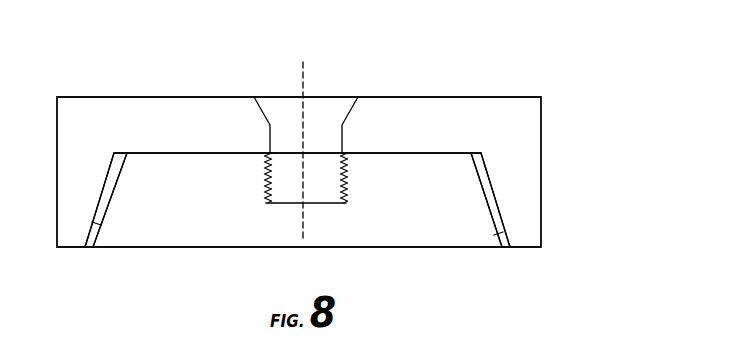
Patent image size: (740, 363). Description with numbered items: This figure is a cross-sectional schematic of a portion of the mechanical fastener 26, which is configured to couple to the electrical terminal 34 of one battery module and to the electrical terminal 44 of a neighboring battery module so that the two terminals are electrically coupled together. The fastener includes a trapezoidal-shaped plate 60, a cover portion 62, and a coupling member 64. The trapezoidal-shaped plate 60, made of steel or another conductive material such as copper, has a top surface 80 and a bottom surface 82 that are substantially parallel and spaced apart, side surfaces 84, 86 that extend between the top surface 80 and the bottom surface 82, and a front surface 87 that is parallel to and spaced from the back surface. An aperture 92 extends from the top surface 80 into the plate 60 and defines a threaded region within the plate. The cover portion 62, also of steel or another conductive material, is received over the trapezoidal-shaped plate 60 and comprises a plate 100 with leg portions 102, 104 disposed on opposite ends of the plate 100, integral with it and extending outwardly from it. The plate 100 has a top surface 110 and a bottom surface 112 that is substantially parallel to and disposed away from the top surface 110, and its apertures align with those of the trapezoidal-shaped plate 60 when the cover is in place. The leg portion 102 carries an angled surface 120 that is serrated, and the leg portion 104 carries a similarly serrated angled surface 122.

The mechanical fastener 26 is at (568, 62).
The electrical terminal 34 is at (106, 201).
The electrical terminal 44 is at (487, 200).
The trapezoidal-shaped plate 60 is at (433, 214).
The cover portion 62 is at (442, 132).
The coupling member 64 is at (335, 134).
The top surface 80 is at (378, 152).
The bottom surface 82 is at (373, 252).
The side surface 84 is at (120, 179).
The side surface 86 is at (474, 166).
The front surface 87 is at (197, 240).
The aperture 92 is at (266, 168).
The plate 100 is at (130, 117).
The leg portion 102 is at (75, 187).
The leg portion 104 is at (527, 167).
The top surface 110 is at (191, 97).
The bottom surface 112 is at (190, 157).
The angled surface 120 is at (95, 222).
The angled surface 122 is at (497, 237).